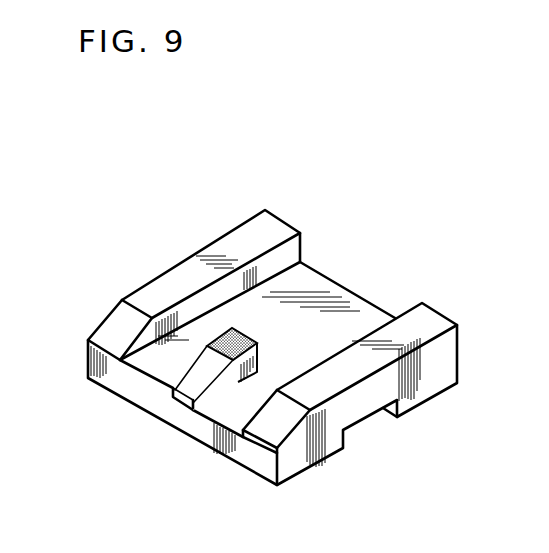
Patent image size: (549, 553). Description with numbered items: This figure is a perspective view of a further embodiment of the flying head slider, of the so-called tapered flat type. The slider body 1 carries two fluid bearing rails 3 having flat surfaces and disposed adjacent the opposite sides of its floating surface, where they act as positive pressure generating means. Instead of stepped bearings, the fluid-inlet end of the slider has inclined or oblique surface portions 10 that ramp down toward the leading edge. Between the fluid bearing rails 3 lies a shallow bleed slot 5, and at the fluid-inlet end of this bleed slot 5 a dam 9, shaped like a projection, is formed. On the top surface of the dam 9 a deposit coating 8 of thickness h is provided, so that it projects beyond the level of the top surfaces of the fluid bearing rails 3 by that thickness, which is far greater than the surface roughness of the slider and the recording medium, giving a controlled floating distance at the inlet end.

The slider body 1 is at (421, 393).
The fluid bearing rails 3 is at (233, 243).
The bleed slot 5 is at (328, 300).
The deposit coating 8 is at (220, 340).
The dam 9 is at (221, 386).
The inclined surface portions 10 is at (118, 324).